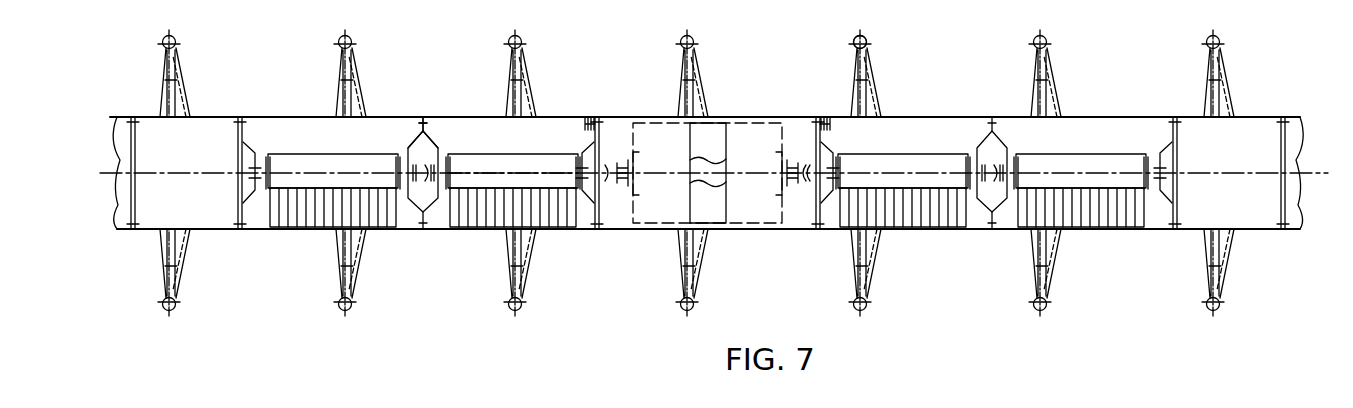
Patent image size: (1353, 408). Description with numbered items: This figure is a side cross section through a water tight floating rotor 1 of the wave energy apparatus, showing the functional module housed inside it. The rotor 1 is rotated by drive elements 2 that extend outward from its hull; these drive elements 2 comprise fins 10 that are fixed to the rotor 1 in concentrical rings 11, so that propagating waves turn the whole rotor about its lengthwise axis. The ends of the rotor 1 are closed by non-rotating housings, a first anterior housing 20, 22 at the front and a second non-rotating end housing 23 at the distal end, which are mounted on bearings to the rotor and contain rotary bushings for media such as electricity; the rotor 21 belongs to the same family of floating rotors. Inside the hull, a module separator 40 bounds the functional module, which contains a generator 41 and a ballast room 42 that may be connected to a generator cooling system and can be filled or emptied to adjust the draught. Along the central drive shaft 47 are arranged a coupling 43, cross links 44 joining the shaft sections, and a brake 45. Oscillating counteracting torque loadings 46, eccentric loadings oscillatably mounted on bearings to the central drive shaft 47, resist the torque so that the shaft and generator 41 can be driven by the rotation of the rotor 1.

The rotor 1 is at (381, 116).
The drive elements 2 is at (689, 33).
The fins 10 is at (858, 80).
The concentrical rings 11 is at (864, 34).
The anterior housing 20 is at (439, 127).
The rotor 21 is at (420, 128).
The anterior housing 22 is at (423, 118).
The second non-rotating end housing 23 is at (275, 116).
The module separator 40 is at (1300, 116).
The generator 41 is at (720, 130).
The ballast room 42 is at (663, 133).
The coupling 43 is at (794, 194).
The cross links 44 is at (804, 182).
The brake 45 is at (585, 118).
The oscillating counteracting torque loadings 46 is at (480, 215).
The central drive shaft 47 is at (507, 167).